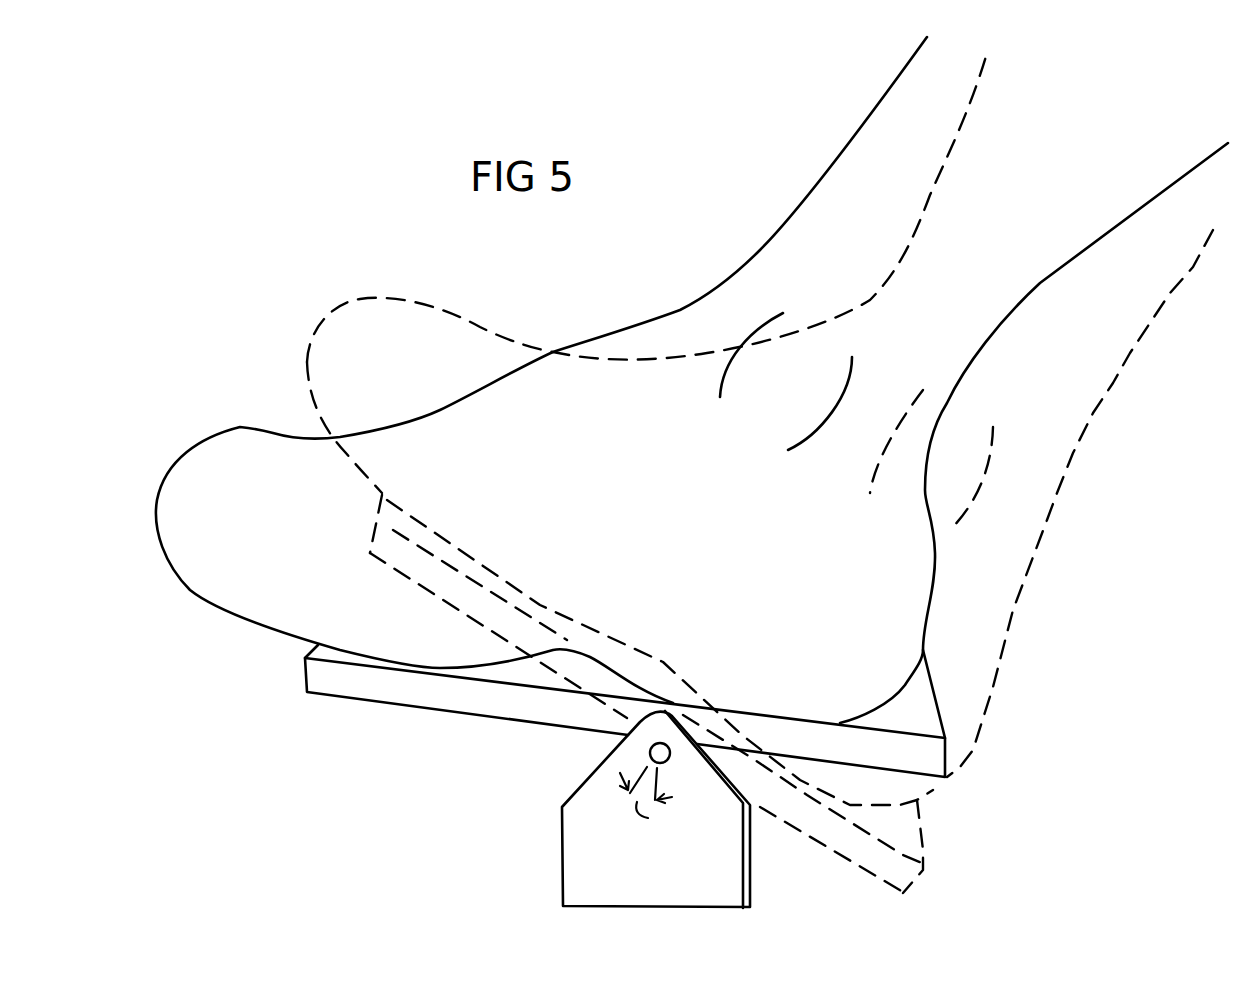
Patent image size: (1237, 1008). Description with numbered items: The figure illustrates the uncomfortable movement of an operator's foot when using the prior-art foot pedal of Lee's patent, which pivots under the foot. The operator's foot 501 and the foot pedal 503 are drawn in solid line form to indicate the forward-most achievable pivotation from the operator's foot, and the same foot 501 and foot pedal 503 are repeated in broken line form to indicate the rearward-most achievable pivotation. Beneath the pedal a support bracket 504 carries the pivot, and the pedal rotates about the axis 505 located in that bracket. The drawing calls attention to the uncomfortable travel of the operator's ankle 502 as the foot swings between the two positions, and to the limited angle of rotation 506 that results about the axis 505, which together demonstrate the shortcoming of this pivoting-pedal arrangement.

The operator's foot 501 is at (692, 407).
The operator's ankle 502 is at (856, 421).
The foot pedal 503 is at (625, 694).
The bracket 504 is at (656, 809).
The axis 505 is at (667, 762).
The angle of rotation 506 is at (657, 798).